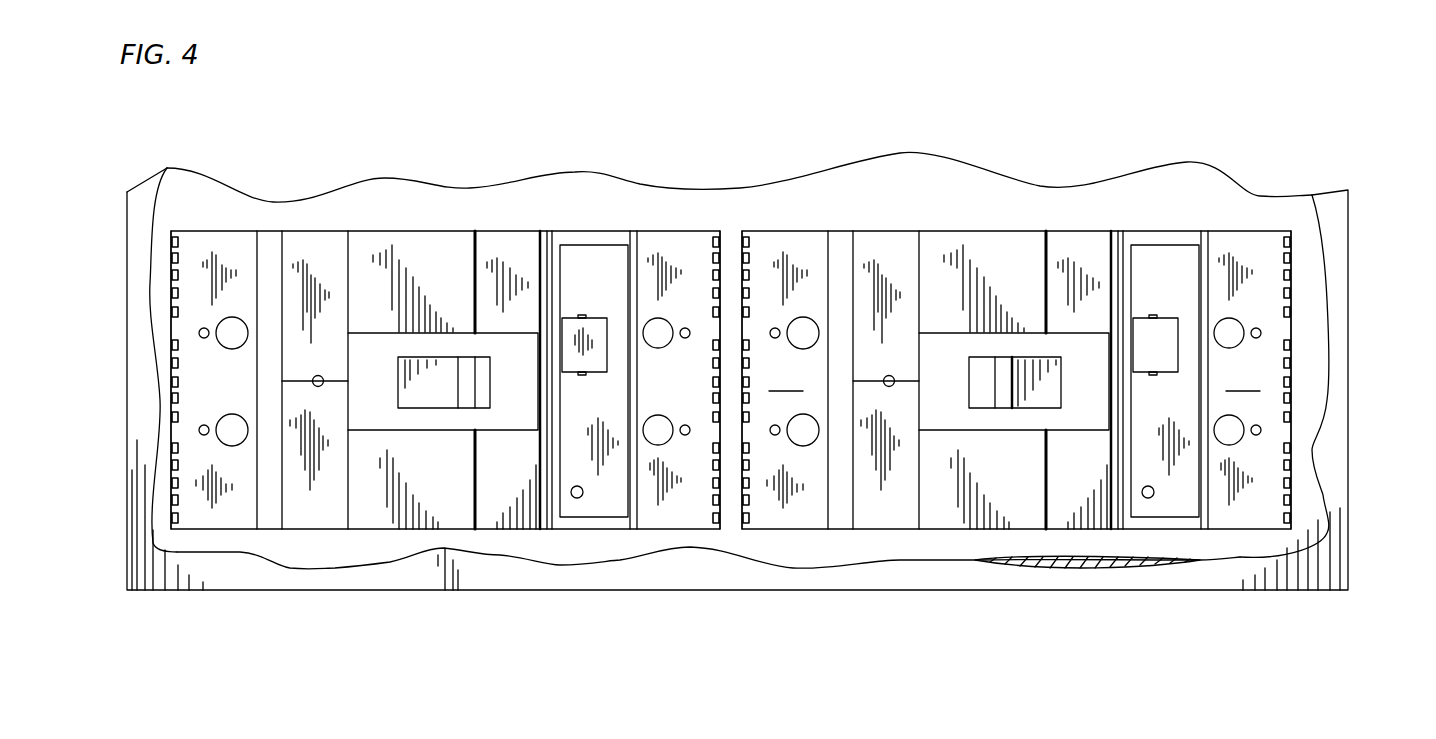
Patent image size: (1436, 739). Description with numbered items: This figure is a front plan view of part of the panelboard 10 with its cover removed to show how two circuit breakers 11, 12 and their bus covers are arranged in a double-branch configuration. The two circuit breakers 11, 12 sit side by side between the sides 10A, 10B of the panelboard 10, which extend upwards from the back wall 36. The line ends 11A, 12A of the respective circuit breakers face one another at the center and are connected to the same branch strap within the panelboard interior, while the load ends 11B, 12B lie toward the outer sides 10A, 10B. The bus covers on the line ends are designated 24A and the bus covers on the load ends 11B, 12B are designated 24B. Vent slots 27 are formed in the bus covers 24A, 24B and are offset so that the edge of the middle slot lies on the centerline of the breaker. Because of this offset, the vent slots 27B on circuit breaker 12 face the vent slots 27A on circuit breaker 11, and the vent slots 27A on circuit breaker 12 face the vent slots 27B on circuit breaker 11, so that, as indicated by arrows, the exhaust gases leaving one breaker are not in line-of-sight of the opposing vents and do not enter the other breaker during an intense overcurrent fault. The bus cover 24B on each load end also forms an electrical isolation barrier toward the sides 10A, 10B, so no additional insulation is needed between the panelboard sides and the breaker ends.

The panelboard 10 is at (732, 401).
The side of the panelboard 10A is at (127, 192).
The side of the panelboard 10B is at (1348, 568).
The circuit breaker 11 is at (783, 378).
The line end of circuit breaker 11A is at (991, 366).
The load end of circuit breaker 11B is at (203, 232).
The circuit breaker 12 is at (1047, 373).
The line end of circuit breaker 12A is at (807, 313).
The load end of circuit breaker 12B is at (1047, 375).
The bus cover 24A is at (232, 391).
The bus cover 24B is at (689, 391).
The vent slots 27 is at (757, 275).
The vent slots 27A is at (1295, 243).
The vent slots 27B is at (712, 243).
The back wall 36 is at (345, 559).